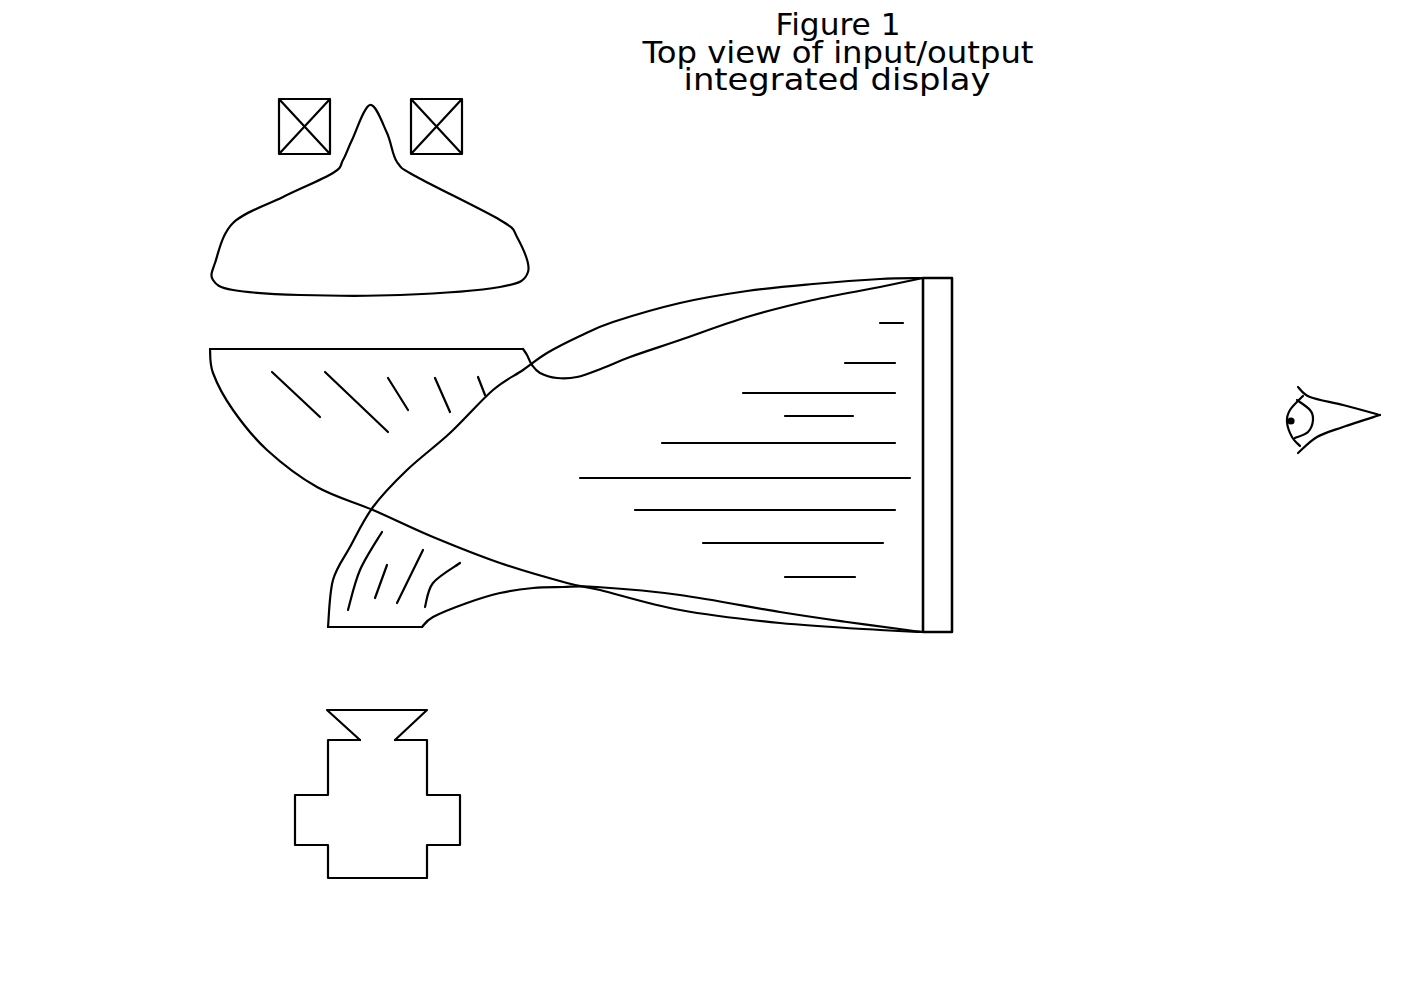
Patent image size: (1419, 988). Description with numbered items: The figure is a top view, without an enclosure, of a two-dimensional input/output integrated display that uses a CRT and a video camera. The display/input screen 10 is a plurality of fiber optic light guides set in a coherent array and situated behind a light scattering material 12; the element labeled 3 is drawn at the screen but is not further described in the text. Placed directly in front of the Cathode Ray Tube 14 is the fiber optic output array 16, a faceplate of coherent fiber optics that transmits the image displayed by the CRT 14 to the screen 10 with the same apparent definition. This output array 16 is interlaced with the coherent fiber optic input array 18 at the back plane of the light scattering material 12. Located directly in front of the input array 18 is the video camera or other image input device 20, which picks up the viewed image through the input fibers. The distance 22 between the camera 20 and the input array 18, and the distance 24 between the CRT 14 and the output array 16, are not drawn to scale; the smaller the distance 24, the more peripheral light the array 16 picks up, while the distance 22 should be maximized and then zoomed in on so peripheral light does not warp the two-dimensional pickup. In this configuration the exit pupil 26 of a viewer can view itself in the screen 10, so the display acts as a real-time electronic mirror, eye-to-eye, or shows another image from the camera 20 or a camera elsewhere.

The display screen surface 3 is at (923, 307).
The display/input screen 10 is at (952, 397).
The light scattering material 12 is at (935, 333).
The Cathode Ray Tube 14 is at (388, 233).
The fiber optic output array 16 is at (483, 367).
The fiber optic input array 18 is at (403, 633).
The video camera 20 is at (377, 788).
The distance between camera and fiber optic input array 22 is at (350, 677).
The distance between CRT and fiber optic output array 24 is at (342, 327).
The exit pupil 26 is at (1287, 452).